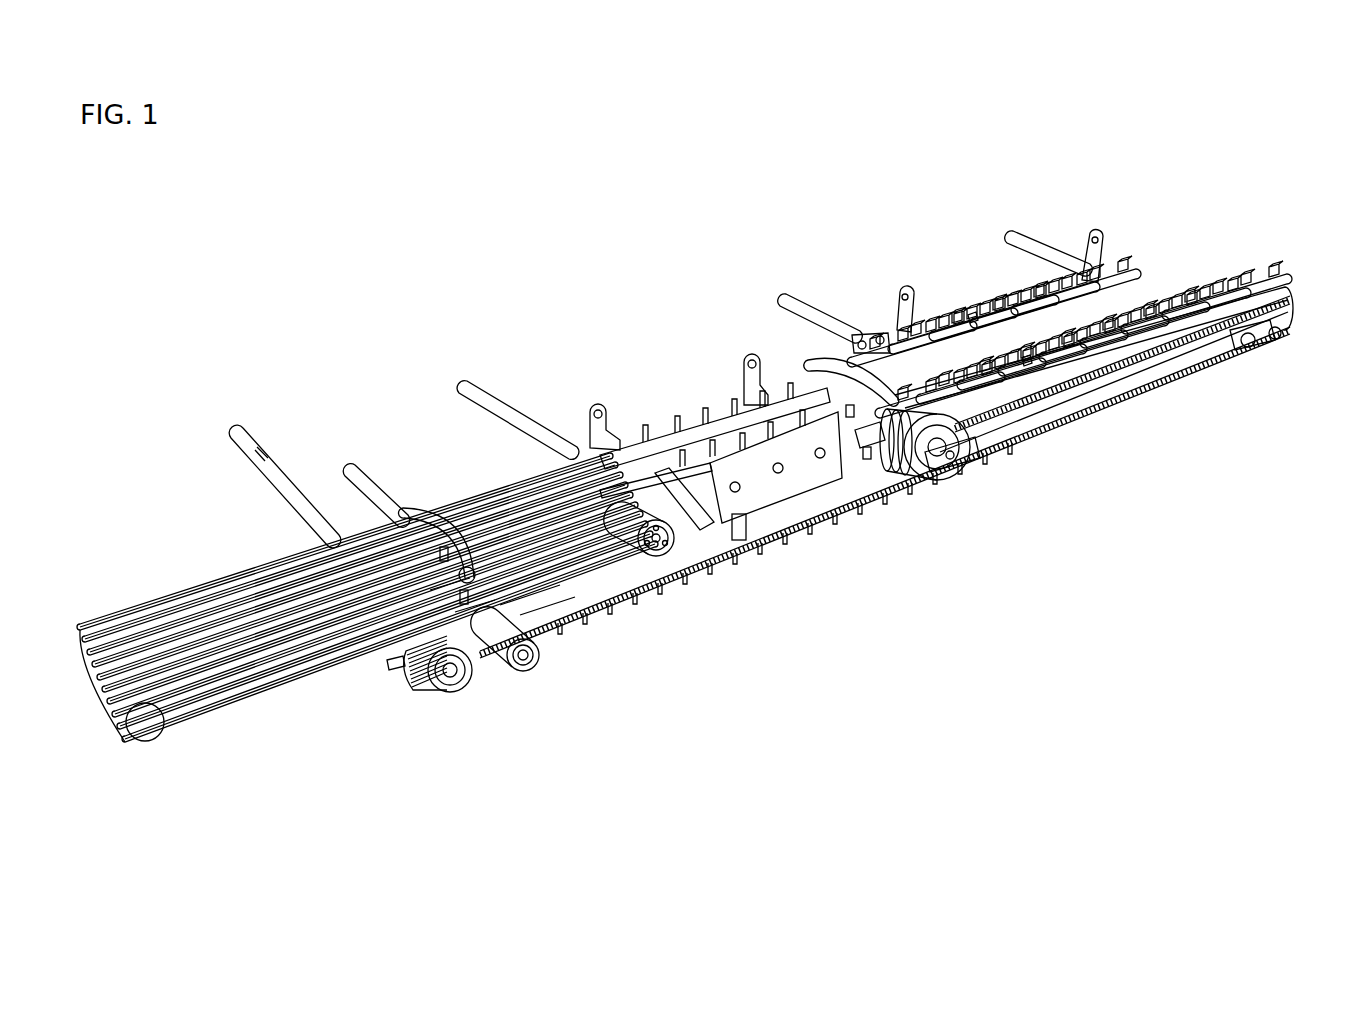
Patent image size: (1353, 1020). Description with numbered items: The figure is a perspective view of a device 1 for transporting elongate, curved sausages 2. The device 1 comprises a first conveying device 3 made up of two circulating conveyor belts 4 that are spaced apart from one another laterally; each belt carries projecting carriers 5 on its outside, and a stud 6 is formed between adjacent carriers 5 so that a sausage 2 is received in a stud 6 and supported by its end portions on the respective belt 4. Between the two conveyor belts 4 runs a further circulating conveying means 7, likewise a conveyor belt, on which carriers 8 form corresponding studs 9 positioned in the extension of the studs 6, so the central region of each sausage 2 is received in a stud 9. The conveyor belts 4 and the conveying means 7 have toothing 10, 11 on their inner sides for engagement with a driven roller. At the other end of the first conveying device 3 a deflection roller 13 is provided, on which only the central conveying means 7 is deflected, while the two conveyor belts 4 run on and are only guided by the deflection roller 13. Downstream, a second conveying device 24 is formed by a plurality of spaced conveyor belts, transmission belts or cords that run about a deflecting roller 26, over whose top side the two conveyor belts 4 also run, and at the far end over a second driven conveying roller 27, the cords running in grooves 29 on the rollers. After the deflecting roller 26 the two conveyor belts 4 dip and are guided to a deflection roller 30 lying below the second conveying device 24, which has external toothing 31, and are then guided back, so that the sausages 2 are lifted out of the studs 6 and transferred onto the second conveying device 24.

The device 1 is at (733, 254).
The sausages 2 is at (913, 346).
The first conveying device 3 is at (1183, 239).
The conveyor belts 4 is at (697, 430).
The carriers 5 is at (1000, 318).
The stud 6 is at (976, 322).
The conveying means 7 is at (871, 440).
The carriers 8 is at (866, 456).
The studs 9 is at (865, 392).
The toothing 10 is at (1180, 386).
The toothing 11 is at (1164, 350).
The deflection roller 13 is at (930, 478).
The second conveying device 24 is at (443, 488).
The deflecting roller 26 is at (658, 557).
The second driven conveying roller 27 is at (147, 725).
The grooves 29 is at (143, 693).
The deflection roller 30 is at (451, 694).
The external toothing 31 is at (416, 672).